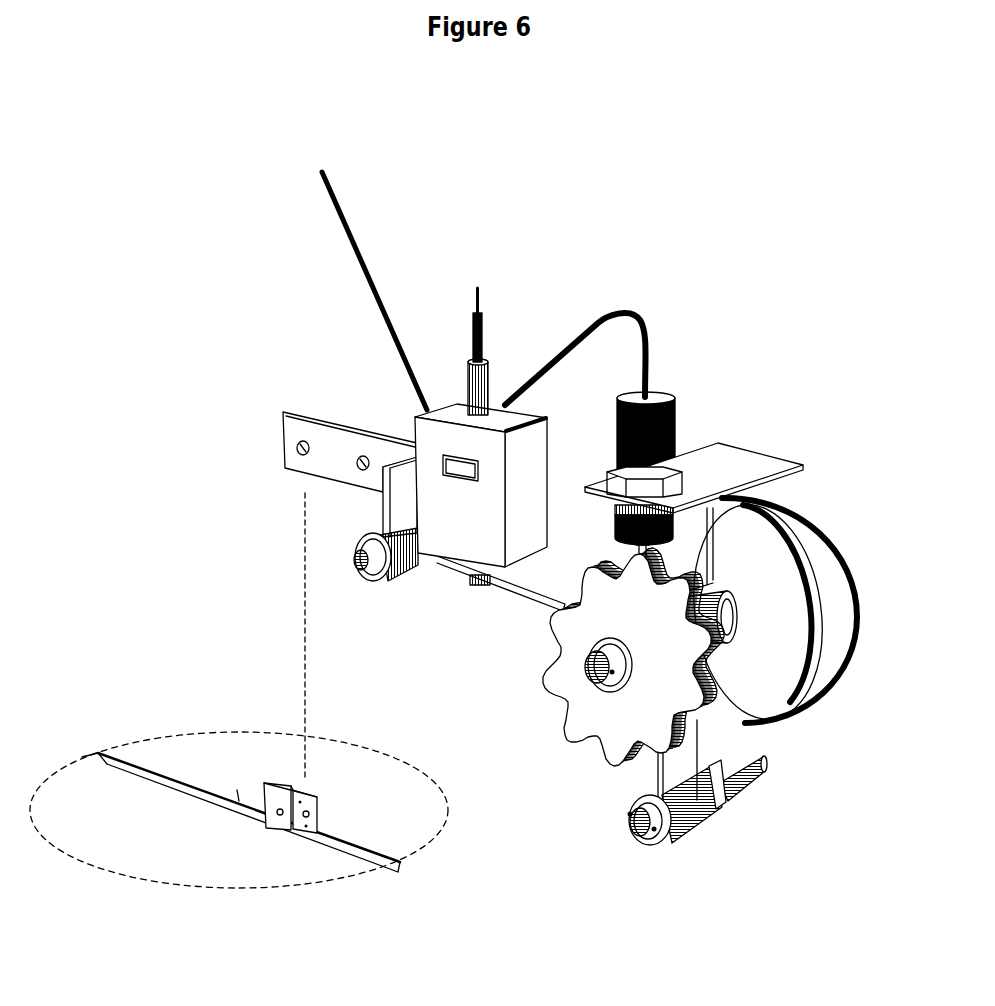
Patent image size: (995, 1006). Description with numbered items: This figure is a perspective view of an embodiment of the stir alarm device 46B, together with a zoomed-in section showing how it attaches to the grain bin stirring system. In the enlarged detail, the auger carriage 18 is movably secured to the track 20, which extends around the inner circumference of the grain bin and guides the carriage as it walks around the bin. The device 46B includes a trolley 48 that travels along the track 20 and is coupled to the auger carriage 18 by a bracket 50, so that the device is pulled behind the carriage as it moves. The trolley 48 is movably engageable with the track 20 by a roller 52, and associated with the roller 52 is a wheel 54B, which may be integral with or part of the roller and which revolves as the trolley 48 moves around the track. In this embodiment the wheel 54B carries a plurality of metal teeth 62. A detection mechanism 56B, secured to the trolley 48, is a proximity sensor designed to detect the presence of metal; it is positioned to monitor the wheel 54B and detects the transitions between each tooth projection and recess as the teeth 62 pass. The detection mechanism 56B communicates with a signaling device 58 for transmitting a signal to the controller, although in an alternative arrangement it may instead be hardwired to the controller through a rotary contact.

The device 46B is at (416, 122).
The signaling device 58 is at (455, 415).
The detection mechanism 56B is at (657, 400).
The bracket 50 is at (298, 422).
The trolley 48 is at (530, 578).
The wheel 54B is at (577, 693).
The metal teeth 62 is at (592, 741).
The roller 52 is at (838, 630).
The auger carriage 18 is at (278, 782).
The track 20 is at (162, 782).